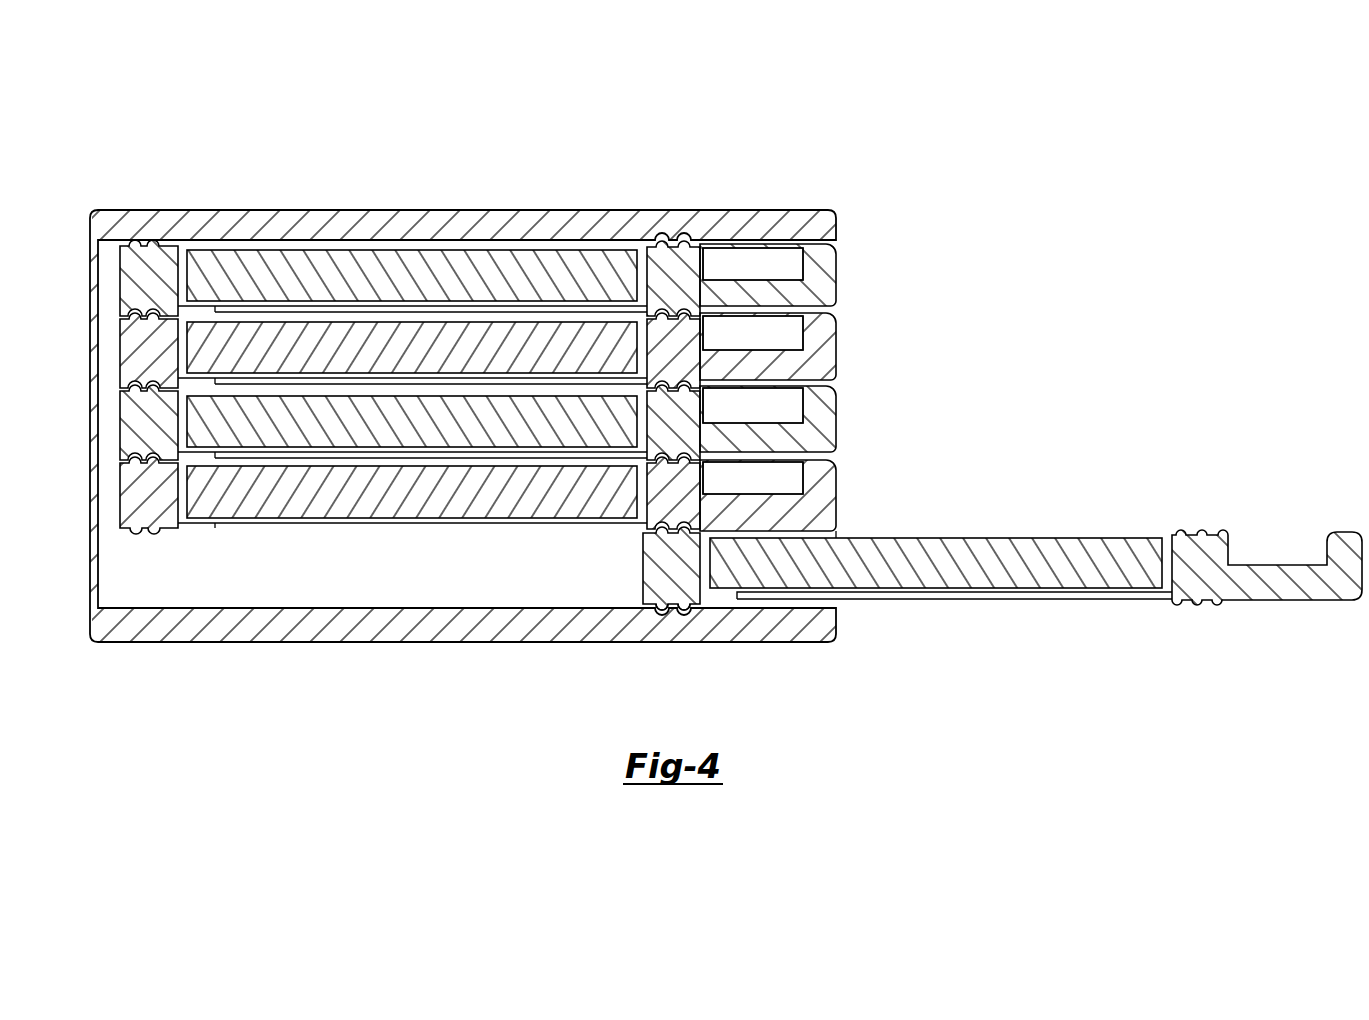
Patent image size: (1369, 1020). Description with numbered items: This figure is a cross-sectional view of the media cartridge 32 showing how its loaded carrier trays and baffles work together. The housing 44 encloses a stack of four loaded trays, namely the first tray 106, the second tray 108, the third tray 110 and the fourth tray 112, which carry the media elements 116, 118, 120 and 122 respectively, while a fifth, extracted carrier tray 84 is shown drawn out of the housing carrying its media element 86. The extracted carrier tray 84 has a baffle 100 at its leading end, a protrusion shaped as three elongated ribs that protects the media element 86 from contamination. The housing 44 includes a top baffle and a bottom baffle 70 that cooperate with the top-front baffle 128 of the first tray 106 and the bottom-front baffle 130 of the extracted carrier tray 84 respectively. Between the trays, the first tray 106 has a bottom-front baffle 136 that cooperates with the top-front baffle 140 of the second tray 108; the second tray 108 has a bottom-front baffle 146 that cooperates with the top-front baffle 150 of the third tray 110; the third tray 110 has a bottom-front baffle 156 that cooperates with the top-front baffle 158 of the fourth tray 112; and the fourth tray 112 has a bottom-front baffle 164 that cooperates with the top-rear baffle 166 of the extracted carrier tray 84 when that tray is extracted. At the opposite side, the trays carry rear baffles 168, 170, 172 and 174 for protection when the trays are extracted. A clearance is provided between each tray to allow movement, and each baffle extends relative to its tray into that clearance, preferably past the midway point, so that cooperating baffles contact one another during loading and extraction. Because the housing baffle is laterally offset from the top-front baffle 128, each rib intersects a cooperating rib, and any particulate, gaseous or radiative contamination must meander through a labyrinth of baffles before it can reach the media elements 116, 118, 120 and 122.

The media cartridge 32 is at (366, 152).
The housing 44 is at (628, 210).
The bottom baffle 70 is at (668, 618).
The media element 116 is at (456, 291).
The media element 118 is at (456, 365).
The top baffle 120 is at (456, 436).
The media element 122 is at (456, 508).
The rear baffle 168 is at (133, 247).
The rear baffle 170 is at (133, 320).
The rear baffle 172 is at (133, 392).
The rear baffle 174 is at (133, 464).
The top-front baffle 128 is at (700, 251).
The top-front baffle 140 is at (705, 332).
The top-front baffle 150 is at (705, 400).
The top-front baffle 158 is at (705, 472).
The first tray 106 is at (825, 262).
The second tray 108 is at (825, 334).
The third tray 110 is at (825, 414).
The fourth tray 112 is at (825, 488).
The bottom-front baffle 136 is at (690, 306).
The bottom-front baffle 146 is at (690, 378).
The bottom-front baffle 156 is at (692, 450).
The bottom-front baffle 164 is at (692, 522).
The top-rear baffle 166 is at (697, 537).
The bottom-front baffle 130 is at (703, 600).
The media element 86 is at (989, 537).
The extracted carrier tray 84 is at (917, 600).
The baffle 100 is at (1183, 530).